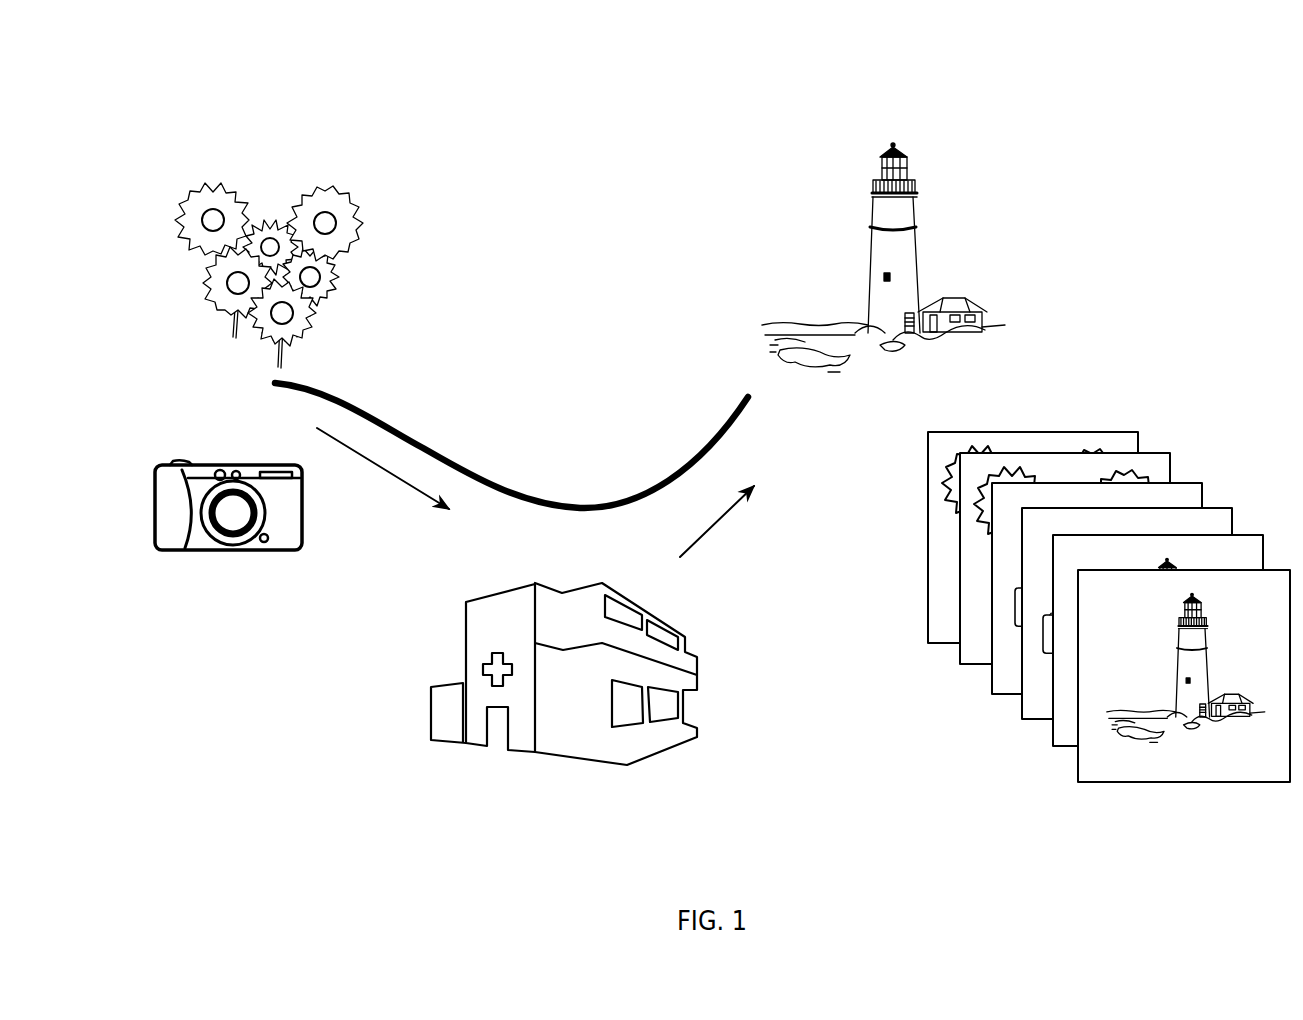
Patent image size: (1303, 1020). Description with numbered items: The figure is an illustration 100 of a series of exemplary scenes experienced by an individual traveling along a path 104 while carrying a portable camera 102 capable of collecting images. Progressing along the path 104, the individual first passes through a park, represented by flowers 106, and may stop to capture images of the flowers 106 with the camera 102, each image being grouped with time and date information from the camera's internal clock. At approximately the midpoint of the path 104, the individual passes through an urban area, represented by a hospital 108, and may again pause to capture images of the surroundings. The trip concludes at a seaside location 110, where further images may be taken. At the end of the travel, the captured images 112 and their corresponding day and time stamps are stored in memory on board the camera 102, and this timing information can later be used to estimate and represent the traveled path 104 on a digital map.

The illustration 100 is at (128, 110).
The portable camera 102 is at (168, 464).
The path 104 is at (423, 449).
The flowers 106 is at (259, 174).
The hospital 108 is at (444, 626).
The seaside location 110 is at (812, 171).
The captured images 112 is at (1213, 472).